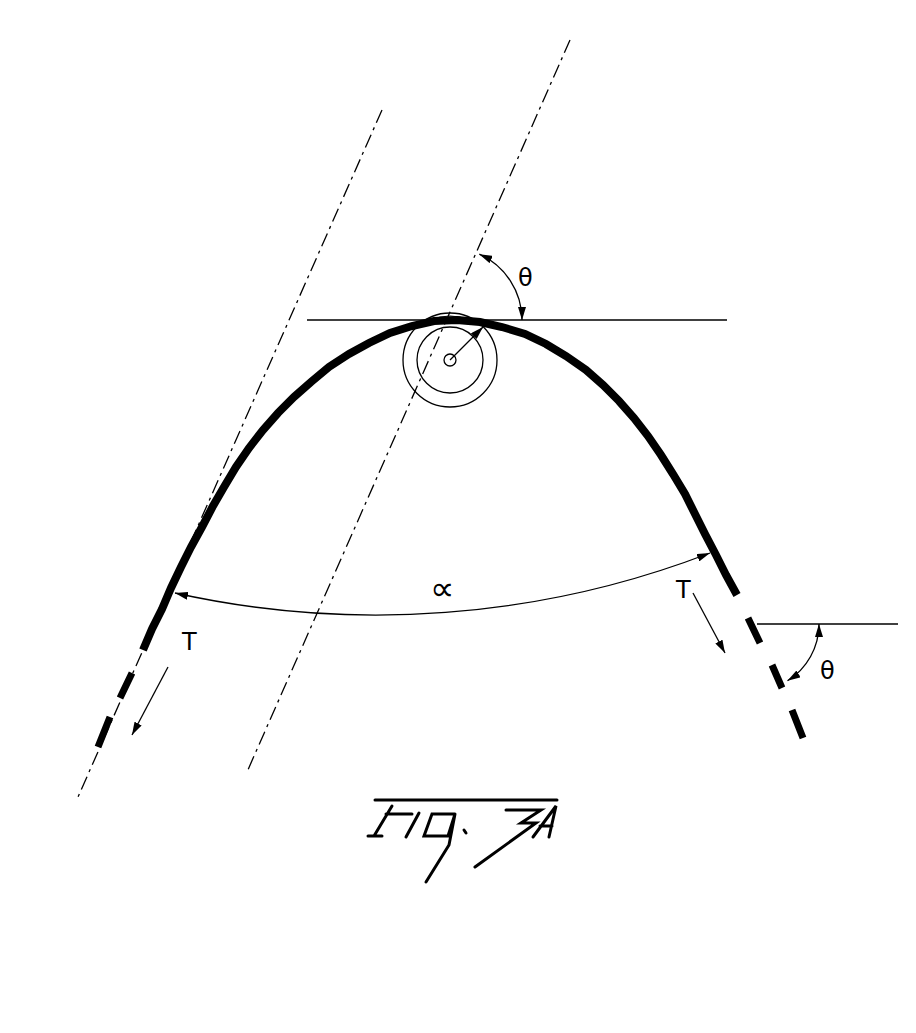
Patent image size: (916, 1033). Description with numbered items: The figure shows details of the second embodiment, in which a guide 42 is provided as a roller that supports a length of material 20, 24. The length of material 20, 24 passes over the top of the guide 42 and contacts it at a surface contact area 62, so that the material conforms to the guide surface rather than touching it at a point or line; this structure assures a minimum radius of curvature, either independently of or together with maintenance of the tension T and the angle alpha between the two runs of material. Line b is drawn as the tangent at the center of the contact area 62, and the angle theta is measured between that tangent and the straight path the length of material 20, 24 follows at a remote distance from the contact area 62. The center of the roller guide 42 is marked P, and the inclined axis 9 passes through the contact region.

The axis line 9 is at (518, 160).
The length of material 20 is at (450, 533).
The length of material 24 is at (688, 490).
The guide 42 is at (410, 382).
The surface contact area 62 is at (440, 312).
The roller center point P is at (480, 378).
The line b is at (608, 319).